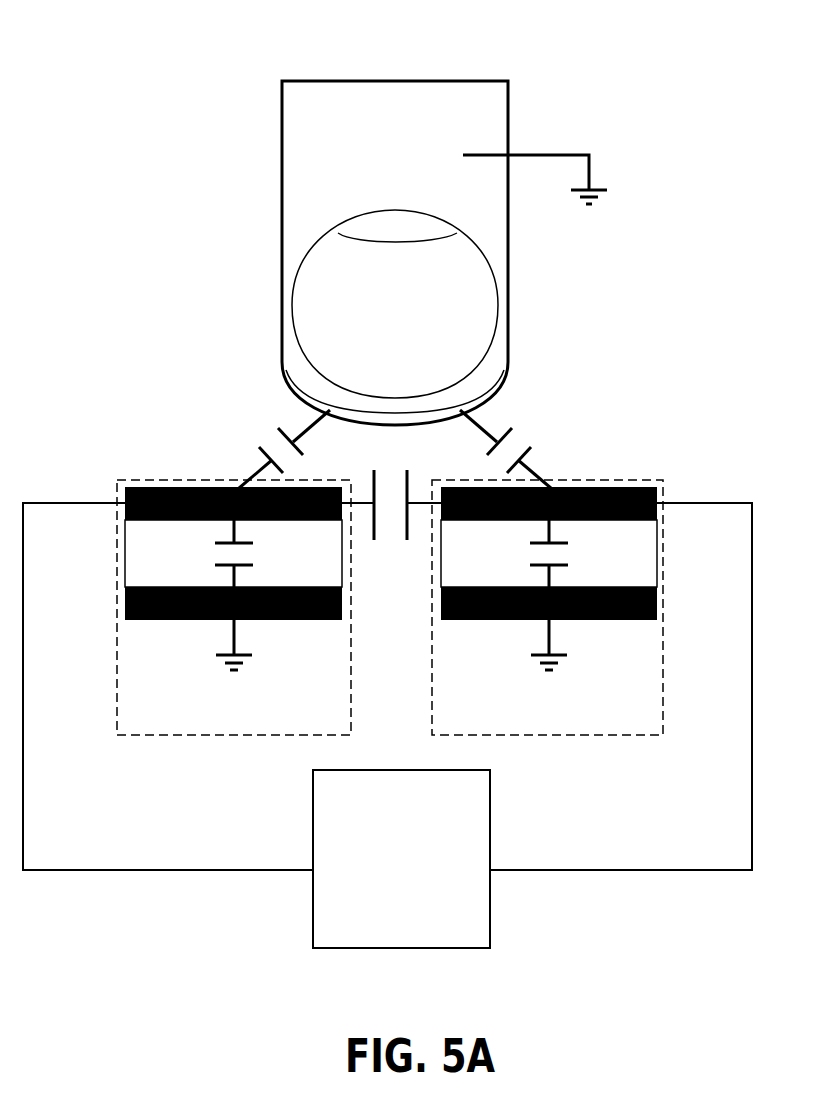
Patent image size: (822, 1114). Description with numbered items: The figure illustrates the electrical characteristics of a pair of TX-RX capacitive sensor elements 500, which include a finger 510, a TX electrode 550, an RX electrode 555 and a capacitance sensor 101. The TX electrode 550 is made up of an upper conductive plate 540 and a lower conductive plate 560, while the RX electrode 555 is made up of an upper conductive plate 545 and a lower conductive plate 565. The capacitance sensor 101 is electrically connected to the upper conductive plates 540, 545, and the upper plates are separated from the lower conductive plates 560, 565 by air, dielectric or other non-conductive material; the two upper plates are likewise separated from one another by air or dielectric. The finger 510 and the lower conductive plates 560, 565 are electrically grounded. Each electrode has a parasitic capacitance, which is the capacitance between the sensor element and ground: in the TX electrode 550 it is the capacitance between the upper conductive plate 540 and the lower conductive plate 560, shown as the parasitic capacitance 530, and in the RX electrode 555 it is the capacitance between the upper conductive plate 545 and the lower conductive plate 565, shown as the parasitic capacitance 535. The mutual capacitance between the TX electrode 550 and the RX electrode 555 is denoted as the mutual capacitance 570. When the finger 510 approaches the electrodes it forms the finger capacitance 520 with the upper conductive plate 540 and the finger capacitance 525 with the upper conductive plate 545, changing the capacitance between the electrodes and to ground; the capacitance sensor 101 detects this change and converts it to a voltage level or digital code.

The TX-RX capacitive sensor elements 500 is at (530, 48).
The finger 510 is at (444, 253).
The finger capacitance CF 520 is at (282, 427).
The finger capacitance CF 525 is at (508, 427).
The parasitic capacitance CP 530 is at (252, 563).
The parasitic capacitance CP 535 is at (566, 563).
The upper conductive plate 540 is at (175, 487).
The upper conductive plate 545 is at (592, 487).
The TX electrode 550 is at (209, 577).
The RX electrode 555 is at (578, 577).
The lower conductive plate 560 is at (126, 620).
The lower conductive plate 565 is at (657, 620).
The mutual capacitance CM 570 is at (408, 540).
The capacitance sensor 101 is at (401, 859).